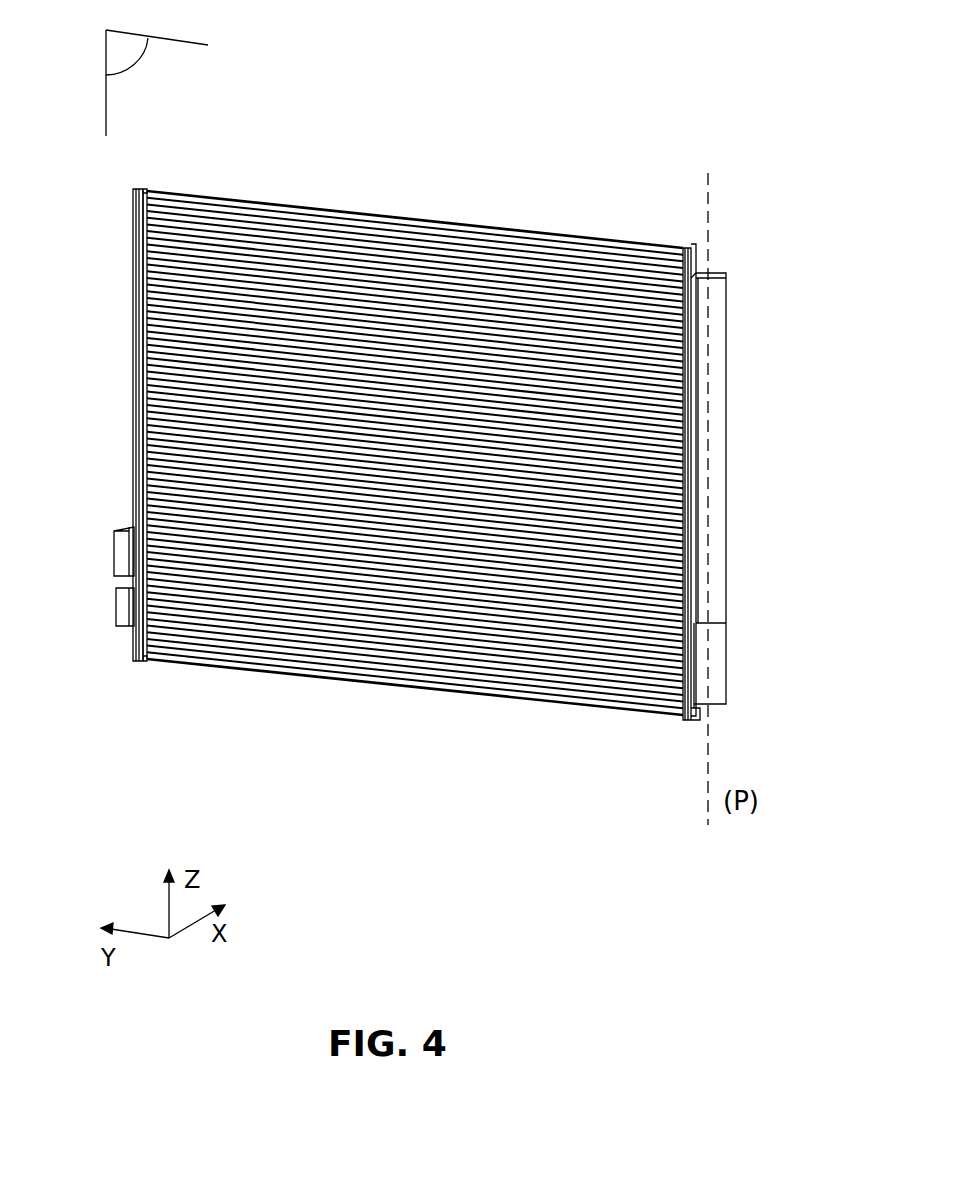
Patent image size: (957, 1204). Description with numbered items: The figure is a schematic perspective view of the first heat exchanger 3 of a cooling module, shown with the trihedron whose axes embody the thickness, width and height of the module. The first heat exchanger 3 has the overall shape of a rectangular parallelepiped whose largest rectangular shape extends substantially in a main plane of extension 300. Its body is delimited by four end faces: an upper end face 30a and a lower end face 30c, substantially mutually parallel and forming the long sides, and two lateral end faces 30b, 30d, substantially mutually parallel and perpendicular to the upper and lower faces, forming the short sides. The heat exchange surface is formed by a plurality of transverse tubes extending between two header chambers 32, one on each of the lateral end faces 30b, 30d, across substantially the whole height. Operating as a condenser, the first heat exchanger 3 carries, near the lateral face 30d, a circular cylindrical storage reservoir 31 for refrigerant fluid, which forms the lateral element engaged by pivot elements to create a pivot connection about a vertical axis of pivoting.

The main plane of extension 300 is at (128, 55).
The first heat exchanger 3 is at (420, 458).
The upper end face 30a is at (432, 214).
The lateral end face 30b is at (688, 714).
The lower end face 30c is at (380, 677).
The lateral end face 30d is at (135, 418).
The storage reservoir 31 is at (718, 432).
The header chambers 32 is at (125, 342).